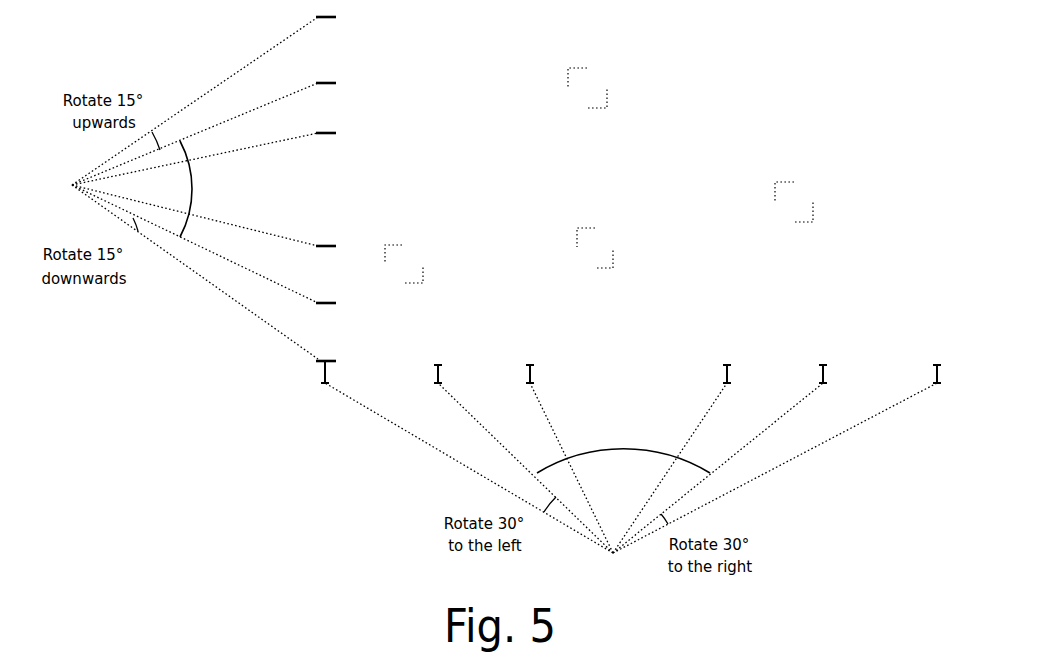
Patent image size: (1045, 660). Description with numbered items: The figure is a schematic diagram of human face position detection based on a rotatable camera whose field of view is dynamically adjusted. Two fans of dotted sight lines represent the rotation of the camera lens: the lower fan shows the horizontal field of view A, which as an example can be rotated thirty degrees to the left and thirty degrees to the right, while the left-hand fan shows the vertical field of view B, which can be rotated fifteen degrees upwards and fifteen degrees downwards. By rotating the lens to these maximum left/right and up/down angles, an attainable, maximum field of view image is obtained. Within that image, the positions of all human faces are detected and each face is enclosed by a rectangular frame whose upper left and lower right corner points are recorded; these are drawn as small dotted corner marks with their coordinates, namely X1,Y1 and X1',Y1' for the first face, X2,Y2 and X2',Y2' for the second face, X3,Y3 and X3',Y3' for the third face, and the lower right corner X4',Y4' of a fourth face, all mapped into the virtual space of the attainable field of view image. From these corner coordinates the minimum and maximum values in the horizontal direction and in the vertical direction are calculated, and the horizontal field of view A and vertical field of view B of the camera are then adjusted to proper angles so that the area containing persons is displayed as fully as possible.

The horizontal field of view A is at (623, 442).
The vertical field of view B is at (200, 189).
The upper left corner point coordinates of first human face rectangular frame X1,Y1 is at (382, 247).
The lower right corner point coordinates of first human face rectangular frame X1',Y1' is at (432, 282).
The upper left corner point coordinates of second human face rectangular frame X2,Y2 is at (574, 231).
The lower right corner point coordinates of second human face rectangular frame X2',Y2' is at (622, 266).
The upper left corner point coordinates of third human face rectangular frame X3,Y3 is at (565, 72).
The lower right corner point coordinates of third human face rectangular frame X3',Y3' is at (617, 106).
The lower right corner point coordinates of fourth human face rectangular frame X4',Y4' is at (815, 211).